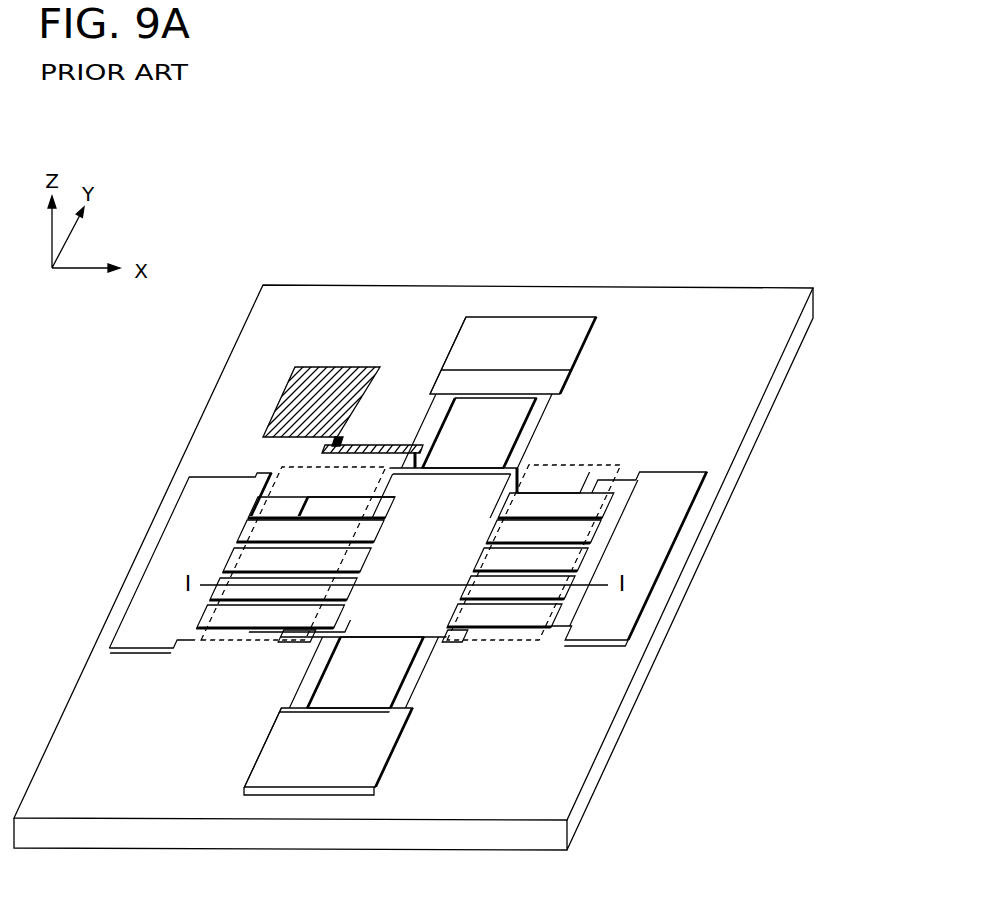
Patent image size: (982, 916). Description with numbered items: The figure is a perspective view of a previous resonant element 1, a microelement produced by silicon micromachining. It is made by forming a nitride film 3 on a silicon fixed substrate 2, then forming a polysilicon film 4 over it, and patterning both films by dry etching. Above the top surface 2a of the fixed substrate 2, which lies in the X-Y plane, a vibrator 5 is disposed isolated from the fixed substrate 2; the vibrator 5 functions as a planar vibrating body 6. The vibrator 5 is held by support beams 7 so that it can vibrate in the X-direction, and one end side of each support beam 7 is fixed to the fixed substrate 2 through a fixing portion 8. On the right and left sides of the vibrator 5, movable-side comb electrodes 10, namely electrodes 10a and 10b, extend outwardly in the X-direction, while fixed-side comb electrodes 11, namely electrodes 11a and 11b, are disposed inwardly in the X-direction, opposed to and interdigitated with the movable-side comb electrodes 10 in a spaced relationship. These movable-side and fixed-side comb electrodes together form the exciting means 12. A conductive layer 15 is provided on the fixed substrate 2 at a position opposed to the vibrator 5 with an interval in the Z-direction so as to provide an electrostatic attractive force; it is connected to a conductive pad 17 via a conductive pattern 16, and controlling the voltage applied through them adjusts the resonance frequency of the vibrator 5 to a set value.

The resonant element 1 is at (532, 256).
The fixed substrate 2 is at (697, 568).
The top surface 2a is at (692, 294).
The nitride film 3 is at (601, 330).
The polysilicon film 4 is at (462, 330).
The vibrator 5 is at (430, 512).
The planar vibrating body 6 is at (443, 508).
The support beams 7 is at (438, 418).
The fixing portion 8 is at (545, 322).
The movable-side comb electrodes 10 is at (391, 478).
The movable-side comb electrode 10a is at (333, 497).
The movable-side comb electrode 10b is at (540, 500).
The fixed-side comb electrodes 11 is at (444, 526).
The fixed-side comb electrode 11a is at (262, 507).
The fixed-side comb electrode 11b is at (540, 503).
The exciting means 12 is at (233, 641).
The conductive layer 15 is at (296, 652).
The conductive pattern 16 is at (357, 447).
The conductive pad 17 is at (315, 367).